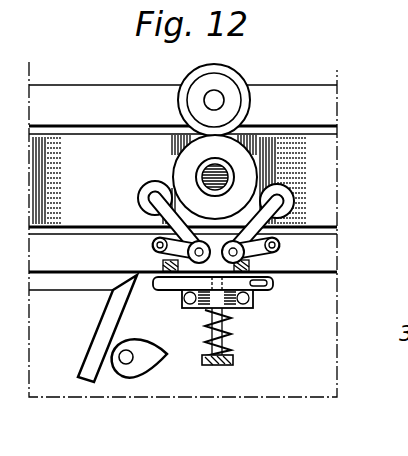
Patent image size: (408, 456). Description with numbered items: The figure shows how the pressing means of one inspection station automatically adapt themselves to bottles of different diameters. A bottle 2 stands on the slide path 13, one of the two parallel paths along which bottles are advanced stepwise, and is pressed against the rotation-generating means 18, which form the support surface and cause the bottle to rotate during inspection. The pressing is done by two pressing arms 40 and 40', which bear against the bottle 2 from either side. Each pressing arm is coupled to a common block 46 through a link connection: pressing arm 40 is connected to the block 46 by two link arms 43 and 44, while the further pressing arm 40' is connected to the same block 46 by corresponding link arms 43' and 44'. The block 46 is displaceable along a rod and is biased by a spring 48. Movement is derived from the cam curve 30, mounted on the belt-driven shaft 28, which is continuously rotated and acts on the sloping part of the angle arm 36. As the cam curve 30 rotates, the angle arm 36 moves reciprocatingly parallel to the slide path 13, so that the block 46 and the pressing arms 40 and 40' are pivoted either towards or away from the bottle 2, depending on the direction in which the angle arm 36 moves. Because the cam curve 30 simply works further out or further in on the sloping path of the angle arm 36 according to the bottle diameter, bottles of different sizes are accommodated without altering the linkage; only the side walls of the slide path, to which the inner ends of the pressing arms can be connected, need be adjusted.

The bottle 2 is at (188, 162).
The slide path 13 is at (330, 157).
The rotation-generating means 18 is at (229, 82).
The shaft 28 is at (124, 366).
The cam curve 30 is at (140, 368).
The angle arm 36 is at (138, 282).
The pressing arm 40 is at (317, 204).
The pressing arm 40' is at (138, 197).
The link arm 43 is at (304, 254).
The link arm 43' is at (144, 254).
The link arm 44 is at (272, 278).
The link arm 44' is at (179, 281).
The block 46 is at (251, 310).
The spring 48 is at (232, 340).